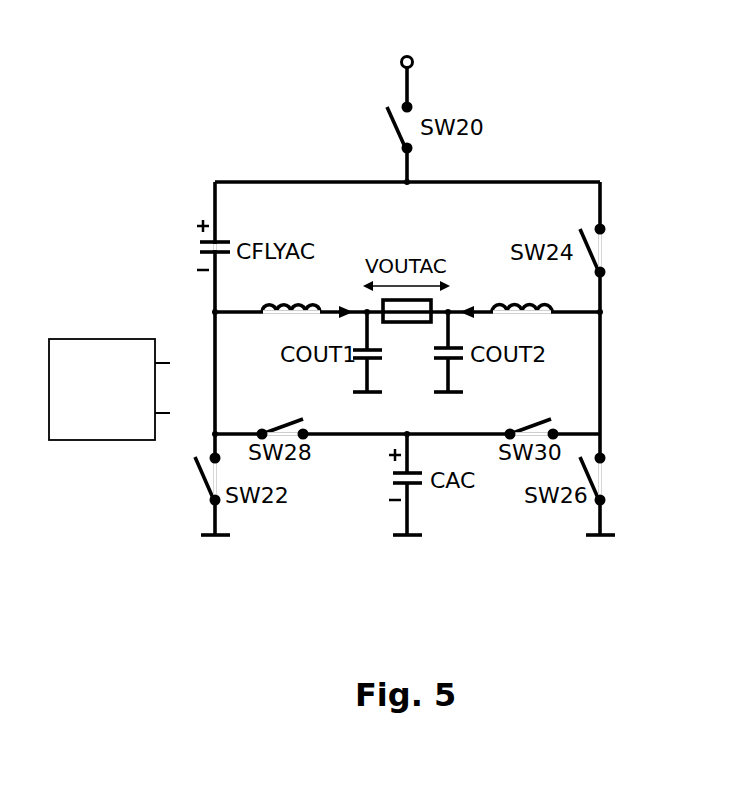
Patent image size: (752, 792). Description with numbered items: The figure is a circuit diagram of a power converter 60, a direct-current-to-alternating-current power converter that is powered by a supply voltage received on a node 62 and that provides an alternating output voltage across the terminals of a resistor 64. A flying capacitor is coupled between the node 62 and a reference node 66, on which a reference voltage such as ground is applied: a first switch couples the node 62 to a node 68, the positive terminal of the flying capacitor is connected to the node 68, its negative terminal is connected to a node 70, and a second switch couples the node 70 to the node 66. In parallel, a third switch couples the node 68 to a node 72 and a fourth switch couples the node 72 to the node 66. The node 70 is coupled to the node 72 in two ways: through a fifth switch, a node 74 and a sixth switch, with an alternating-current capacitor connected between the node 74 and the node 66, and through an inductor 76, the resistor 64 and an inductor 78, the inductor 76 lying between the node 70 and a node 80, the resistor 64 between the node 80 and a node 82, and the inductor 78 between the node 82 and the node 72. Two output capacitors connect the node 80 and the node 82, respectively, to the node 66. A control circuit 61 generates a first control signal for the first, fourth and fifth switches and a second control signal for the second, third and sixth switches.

The power converter 60 is at (518, 75).
The control circuit 61 is at (96, 338).
The node 62 is at (413, 60).
The resistor 64 is at (400, 318).
The reference node 66 is at (372, 394).
The node 68 is at (404, 181).
The node 70 is at (219, 316).
The node 72 is at (596, 316).
The node 74 is at (406, 431).
The inductor 76 is at (283, 304).
The inductor 78 is at (498, 302).
The node 80 is at (366, 309).
The node 82 is at (449, 309).